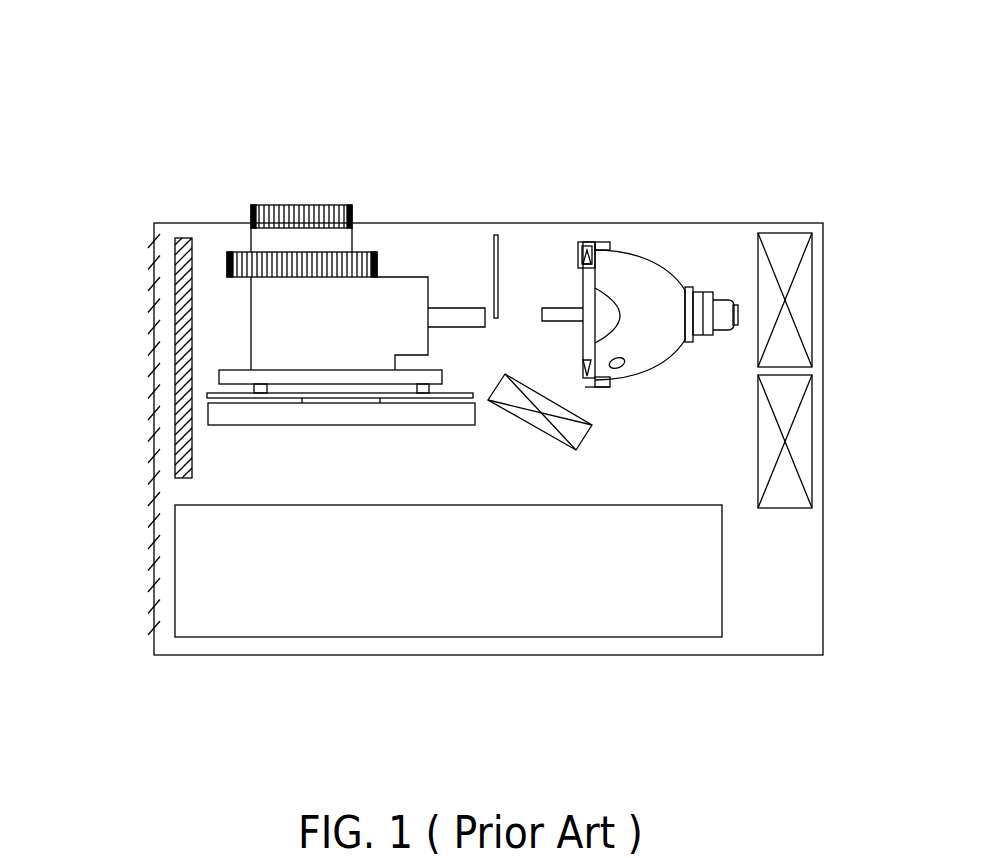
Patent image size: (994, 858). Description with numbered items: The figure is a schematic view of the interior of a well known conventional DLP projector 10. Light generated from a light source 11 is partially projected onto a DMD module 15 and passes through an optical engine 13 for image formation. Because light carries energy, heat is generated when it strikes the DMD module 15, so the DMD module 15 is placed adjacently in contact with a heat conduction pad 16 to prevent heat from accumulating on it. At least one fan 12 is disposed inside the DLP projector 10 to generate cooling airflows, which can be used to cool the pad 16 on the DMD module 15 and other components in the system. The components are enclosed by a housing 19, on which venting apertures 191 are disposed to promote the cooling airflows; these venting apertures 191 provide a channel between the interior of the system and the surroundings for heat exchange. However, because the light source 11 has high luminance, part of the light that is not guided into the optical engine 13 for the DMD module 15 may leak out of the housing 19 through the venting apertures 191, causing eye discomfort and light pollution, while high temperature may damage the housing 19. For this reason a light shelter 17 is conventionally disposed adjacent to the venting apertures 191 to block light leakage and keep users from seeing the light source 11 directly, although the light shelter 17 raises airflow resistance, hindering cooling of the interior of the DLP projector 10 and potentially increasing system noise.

The DLP projector 10 is at (148, 36).
The light source 11 is at (640, 262).
The fan 12 is at (685, 370).
The optical engine 13 is at (352, 265).
The DMD module 15 is at (258, 354).
The heat conduction pad 16 is at (259, 448).
The light shelter 17 is at (190, 317).
The housing 19 is at (450, 403).
The venting apertures 191 is at (101, 431).